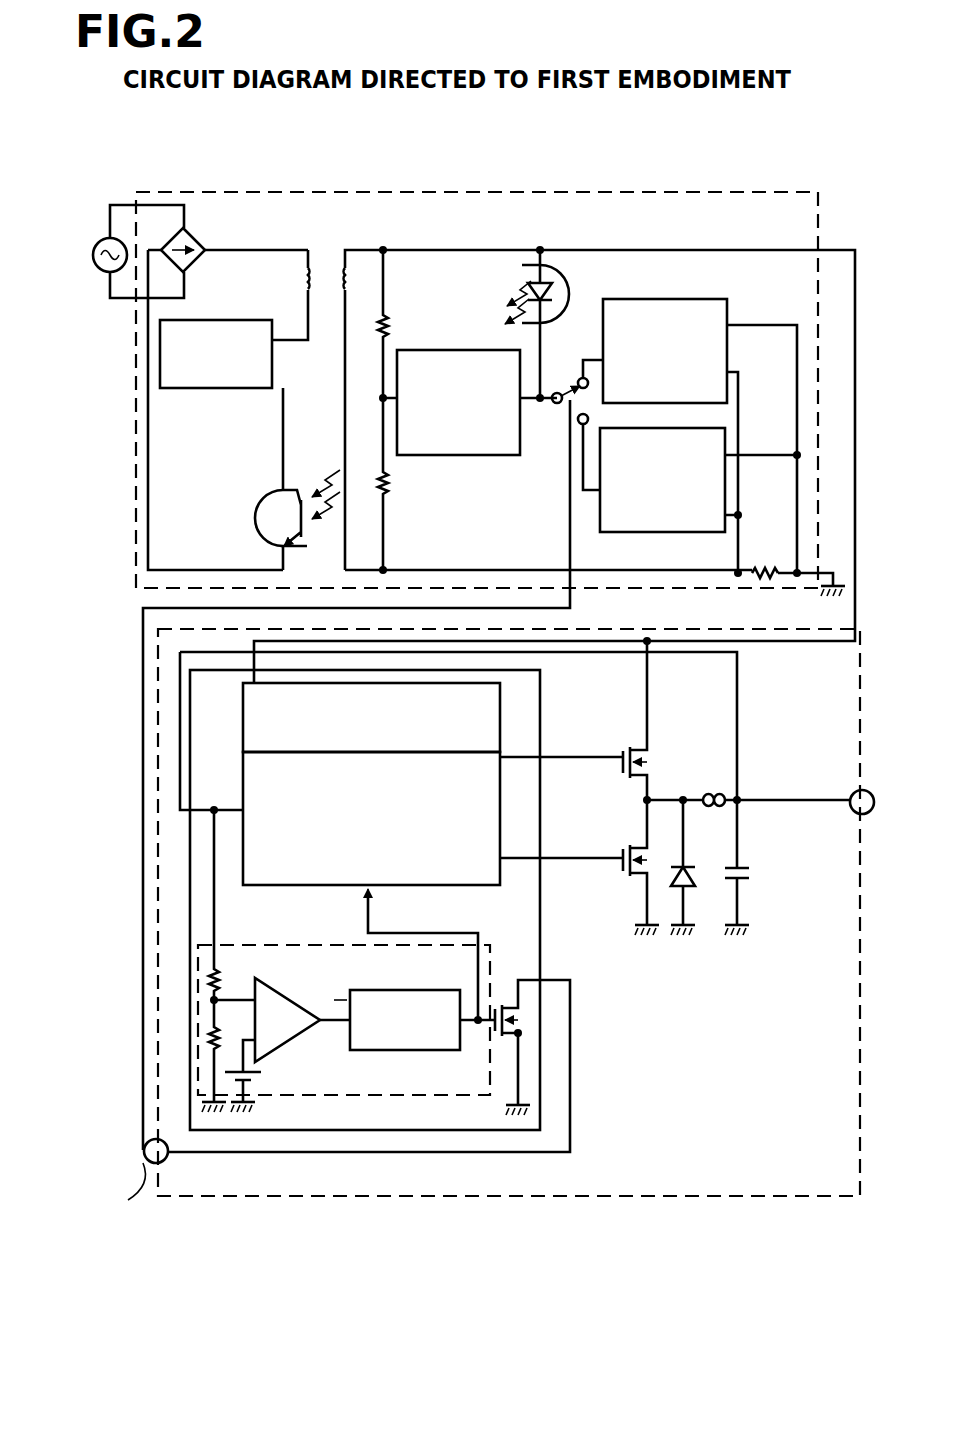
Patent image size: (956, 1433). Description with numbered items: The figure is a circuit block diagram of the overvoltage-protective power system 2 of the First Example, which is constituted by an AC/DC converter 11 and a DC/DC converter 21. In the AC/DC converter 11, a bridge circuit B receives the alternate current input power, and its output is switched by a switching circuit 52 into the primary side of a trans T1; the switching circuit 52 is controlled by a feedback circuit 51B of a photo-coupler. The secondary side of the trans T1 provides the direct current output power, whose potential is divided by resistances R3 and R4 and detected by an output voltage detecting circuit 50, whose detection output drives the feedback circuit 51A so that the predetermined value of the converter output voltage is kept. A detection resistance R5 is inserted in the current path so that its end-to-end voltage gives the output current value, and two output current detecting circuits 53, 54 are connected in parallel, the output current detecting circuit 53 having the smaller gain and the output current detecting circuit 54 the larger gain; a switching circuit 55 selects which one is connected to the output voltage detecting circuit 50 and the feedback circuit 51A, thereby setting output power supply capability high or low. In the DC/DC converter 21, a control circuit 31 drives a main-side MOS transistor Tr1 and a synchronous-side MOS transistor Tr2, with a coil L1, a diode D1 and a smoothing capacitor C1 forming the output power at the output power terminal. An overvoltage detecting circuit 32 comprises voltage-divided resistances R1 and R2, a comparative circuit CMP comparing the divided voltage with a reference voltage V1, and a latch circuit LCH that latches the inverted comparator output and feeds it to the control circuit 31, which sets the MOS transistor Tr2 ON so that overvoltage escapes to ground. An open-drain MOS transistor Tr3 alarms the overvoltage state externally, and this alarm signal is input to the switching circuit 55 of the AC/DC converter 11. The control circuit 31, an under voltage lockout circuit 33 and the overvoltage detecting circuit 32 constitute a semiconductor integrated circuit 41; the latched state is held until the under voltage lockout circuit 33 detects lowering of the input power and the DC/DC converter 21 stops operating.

The power system 2 is at (707, 168).
The AC/DC converter 11 is at (136, 484).
The DC/DC converter 21 is at (272, 1198).
The control circuit 31 is at (255, 790).
The overvoltage detecting circuit 32 is at (306, 944).
The under voltage lockout circuit 33 is at (243, 730).
The semiconductor integrated circuit 41 is at (541, 932).
The output voltage detecting circuit 50 is at (408, 362).
The feedback circuit 51A is at (565, 300).
The feedback circuit 51B is at (262, 506).
The switching circuit 52 is at (262, 392).
The output current detecting circuit 53 is at (706, 312).
The output current detecting circuit 54 is at (712, 534).
The switching circuit 55 is at (561, 412).
The bridge circuit B is at (198, 234).
The trans T1 is at (322, 265).
The voltage-divided resistance R1 is at (219, 981).
The voltage-divided resistance R2 is at (219, 1041).
The resistance R3 is at (388, 328).
The resistance R4 is at (391, 483).
The detection resistance R5 is at (766, 558).
The MOS transistor Tr1 is at (643, 750).
The MOS transistor Tr2 is at (640, 845).
The MOS transistor Tr3 is at (500, 1003).
The coil L1 is at (720, 795).
The diode D1 is at (699, 862).
The capacitor C1 is at (742, 871).
The reference voltage V1 is at (262, 1078).
The comparative circuit CMP is at (298, 1010).
The latch circuit LCH is at (370, 992).